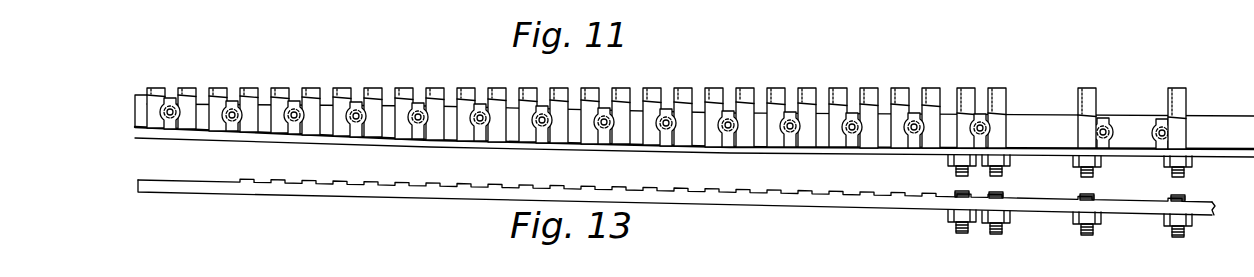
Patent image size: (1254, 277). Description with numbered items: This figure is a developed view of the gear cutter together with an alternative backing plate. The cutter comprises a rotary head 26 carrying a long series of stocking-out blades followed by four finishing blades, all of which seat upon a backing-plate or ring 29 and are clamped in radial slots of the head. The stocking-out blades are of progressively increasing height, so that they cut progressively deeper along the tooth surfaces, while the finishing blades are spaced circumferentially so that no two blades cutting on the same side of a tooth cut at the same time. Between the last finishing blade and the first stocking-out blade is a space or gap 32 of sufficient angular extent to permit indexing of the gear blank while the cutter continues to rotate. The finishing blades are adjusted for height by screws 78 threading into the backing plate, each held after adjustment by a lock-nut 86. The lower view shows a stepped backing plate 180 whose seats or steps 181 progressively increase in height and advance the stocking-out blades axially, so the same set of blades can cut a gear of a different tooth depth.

In FIG. 11, the space or gap 32 is at (1219, 128).
In FIG. 11, the rotary head 26 is at (762, 138).
In FIG. 11, the backing-plate or ring 29 is at (834, 149).
In FIG. 13, the seats or steps 181 is at (277, 180).
In FIG. 13, the stepped backing plate 180 is at (876, 205).
In FIG. 13, the screws 78 is at (993, 237).
In FIG. 13, the lock-nut 86 is at (1167, 220).